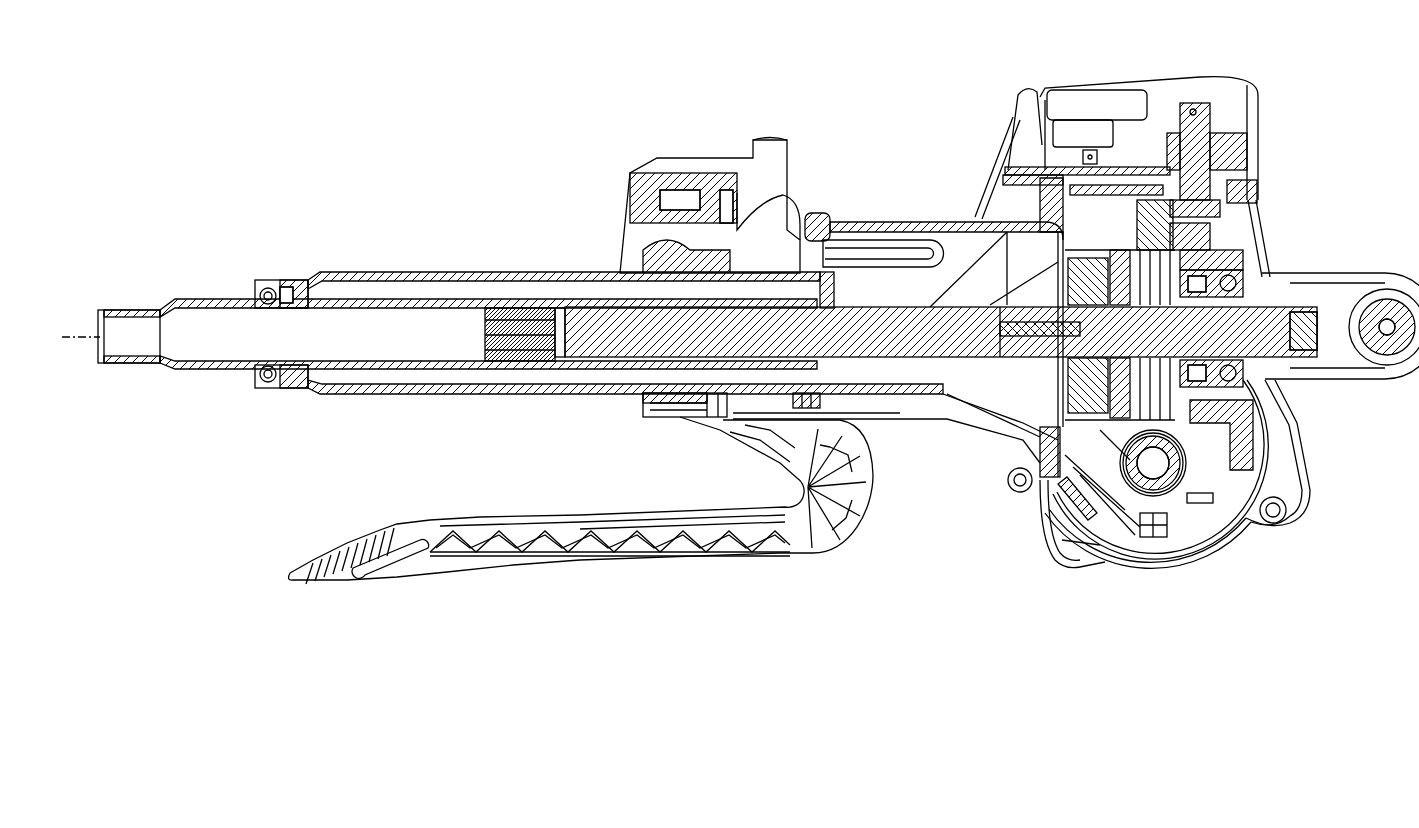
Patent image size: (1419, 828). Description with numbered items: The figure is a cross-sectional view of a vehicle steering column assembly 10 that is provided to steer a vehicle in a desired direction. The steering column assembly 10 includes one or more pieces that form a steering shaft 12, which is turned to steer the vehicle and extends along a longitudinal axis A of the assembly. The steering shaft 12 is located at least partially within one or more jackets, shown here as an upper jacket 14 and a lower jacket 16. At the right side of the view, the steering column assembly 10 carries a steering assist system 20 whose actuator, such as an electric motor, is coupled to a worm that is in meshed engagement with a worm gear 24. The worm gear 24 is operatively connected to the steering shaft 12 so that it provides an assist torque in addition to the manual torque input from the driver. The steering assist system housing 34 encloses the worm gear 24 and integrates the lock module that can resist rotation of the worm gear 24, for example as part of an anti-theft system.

The steering column assembly 10 is at (365, 140).
The steering shaft 12 is at (625, 322).
The upper jacket 14 is at (357, 380).
The lower jacket 16 is at (887, 410).
The steering assist system 20 is at (1168, 117).
The worm gear 24 is at (1180, 270).
The steering assist system housing 34 is at (1218, 518).
The longitudinal axis A is at (84, 326).